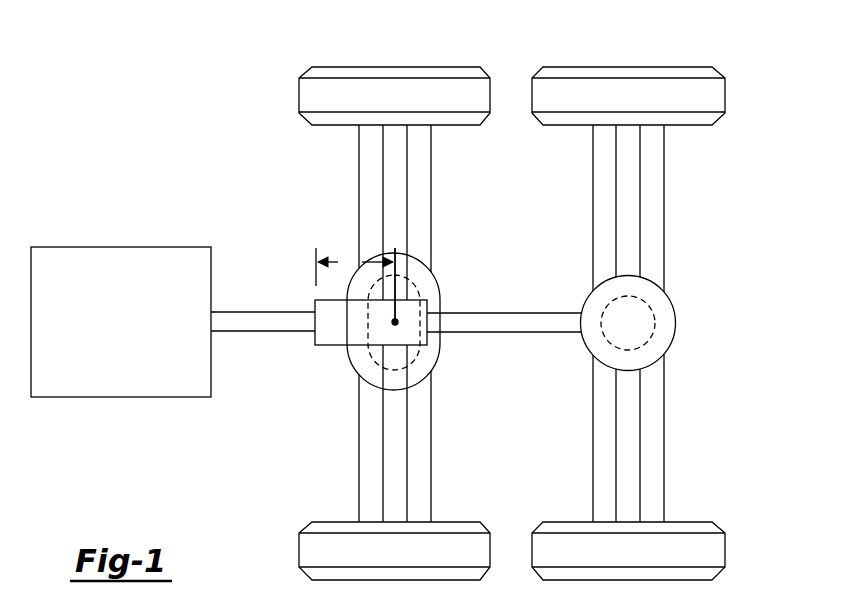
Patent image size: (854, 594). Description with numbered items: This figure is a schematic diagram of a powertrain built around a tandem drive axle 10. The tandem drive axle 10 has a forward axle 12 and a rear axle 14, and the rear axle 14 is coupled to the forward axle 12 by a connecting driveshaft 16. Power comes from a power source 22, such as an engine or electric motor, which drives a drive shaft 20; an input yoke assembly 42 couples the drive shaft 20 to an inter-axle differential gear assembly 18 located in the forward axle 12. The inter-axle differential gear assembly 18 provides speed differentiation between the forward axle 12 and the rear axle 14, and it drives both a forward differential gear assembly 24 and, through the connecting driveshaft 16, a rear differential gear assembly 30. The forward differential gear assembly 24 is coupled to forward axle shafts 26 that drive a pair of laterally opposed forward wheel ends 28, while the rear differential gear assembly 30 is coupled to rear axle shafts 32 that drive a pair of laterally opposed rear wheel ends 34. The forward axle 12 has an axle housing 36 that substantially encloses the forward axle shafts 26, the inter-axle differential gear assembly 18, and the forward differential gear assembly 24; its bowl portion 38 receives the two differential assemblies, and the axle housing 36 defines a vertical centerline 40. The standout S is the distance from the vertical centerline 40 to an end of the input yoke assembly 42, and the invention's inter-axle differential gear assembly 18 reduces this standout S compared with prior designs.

The tandem drive axle 10 is at (740, 49).
The forward axle 12 is at (336, 231).
The rear axle 14 is at (575, 201).
The connecting driveshaft 16 is at (540, 333).
The inter-axle differential gear assembly 18 is at (420, 310).
The drive shaft 20 is at (243, 333).
The power source 22 is at (108, 377).
The forward differential gear assembly 24 is at (440, 270).
The forward axle shafts 26 is at (397, 183).
The forward wheel ends 28 is at (381, 104).
The rear differential gear assembly 30 is at (628, 323).
The rear axle shafts 32 is at (630, 183).
The rear wheel ends 34 is at (615, 104).
The axle housing 36 is at (358, 164).
The bowl portion 38 is at (437, 370).
The vertical centerline 40 is at (395, 322).
The input yoke assembly 42 is at (315, 306).
The standout S is at (354, 267).